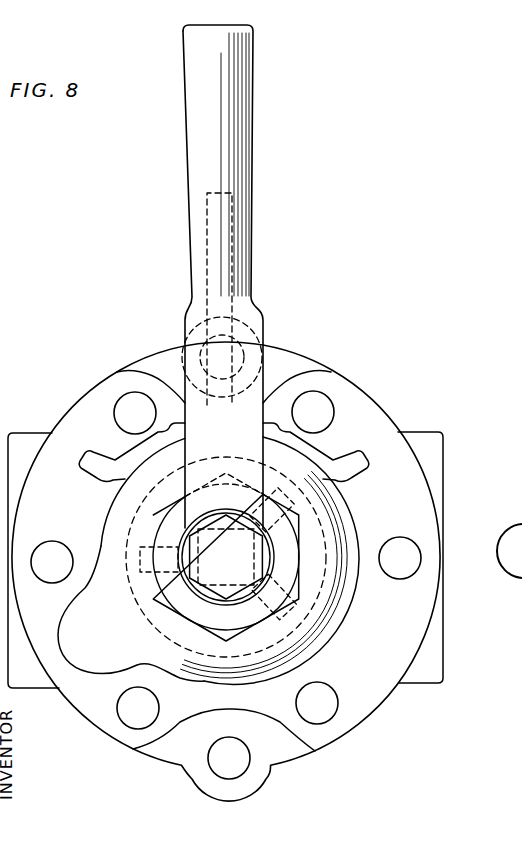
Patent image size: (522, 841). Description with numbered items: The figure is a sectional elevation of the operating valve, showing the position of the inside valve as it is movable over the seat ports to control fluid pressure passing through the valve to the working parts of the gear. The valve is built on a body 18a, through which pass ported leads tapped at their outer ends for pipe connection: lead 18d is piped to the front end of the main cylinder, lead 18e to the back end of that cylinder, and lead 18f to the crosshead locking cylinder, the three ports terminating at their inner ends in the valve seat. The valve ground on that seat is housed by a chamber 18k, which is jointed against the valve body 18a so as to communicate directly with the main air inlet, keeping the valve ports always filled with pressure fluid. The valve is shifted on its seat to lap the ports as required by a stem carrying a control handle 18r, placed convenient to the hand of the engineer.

The valve body 18a is at (412, 432).
The ported lead 18d is at (302, 500).
The ported lead 18e is at (288, 622).
The ported lead 18f is at (140, 558).
The chamber 18k is at (353, 593).
The control handle 18r is at (251, 229).